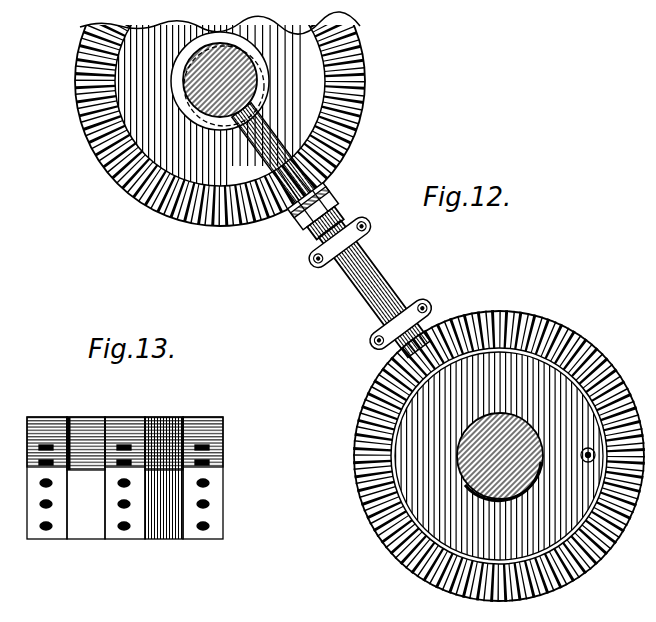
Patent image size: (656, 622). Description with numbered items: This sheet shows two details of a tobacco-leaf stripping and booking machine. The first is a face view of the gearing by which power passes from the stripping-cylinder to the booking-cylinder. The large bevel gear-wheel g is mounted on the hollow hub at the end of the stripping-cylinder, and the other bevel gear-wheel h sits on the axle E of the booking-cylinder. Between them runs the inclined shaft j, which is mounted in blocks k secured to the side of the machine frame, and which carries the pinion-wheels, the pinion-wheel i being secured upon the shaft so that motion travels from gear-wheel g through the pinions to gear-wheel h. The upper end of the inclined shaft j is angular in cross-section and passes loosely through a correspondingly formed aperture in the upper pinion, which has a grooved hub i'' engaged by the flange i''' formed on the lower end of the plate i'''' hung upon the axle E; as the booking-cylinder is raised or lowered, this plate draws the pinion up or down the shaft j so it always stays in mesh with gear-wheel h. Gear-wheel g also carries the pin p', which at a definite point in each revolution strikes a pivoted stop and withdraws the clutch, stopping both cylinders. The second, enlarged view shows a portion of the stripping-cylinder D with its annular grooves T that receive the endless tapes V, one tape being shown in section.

In FIG. 12, the bevel gear-wheel h is at (188, 214).
In FIG. 12, the bevel gear-wheel g is at (360, 425).
In FIG. 12, the pinion-wheel i is at (499, 441).
In FIG. 12, the grooved hub i'' is at (312, 198).
In FIG. 12, the flange i''' is at (327, 213).
In FIG. 12, the plate i'''' is at (242, 81).
In FIG. 12, the axle E is at (252, 72).
In FIG. 12, the inclined shaft j is at (272, 136).
In FIG. 12, the blocks k is at (372, 220).
In FIG. 12, the pin p' is at (587, 467).
In FIG. 13, the endless tapes V is at (88, 418).
In FIG. 13, the annular grooves T is at (176, 548).
In FIG. 13, the stripping-cylinder D is at (223, 502).